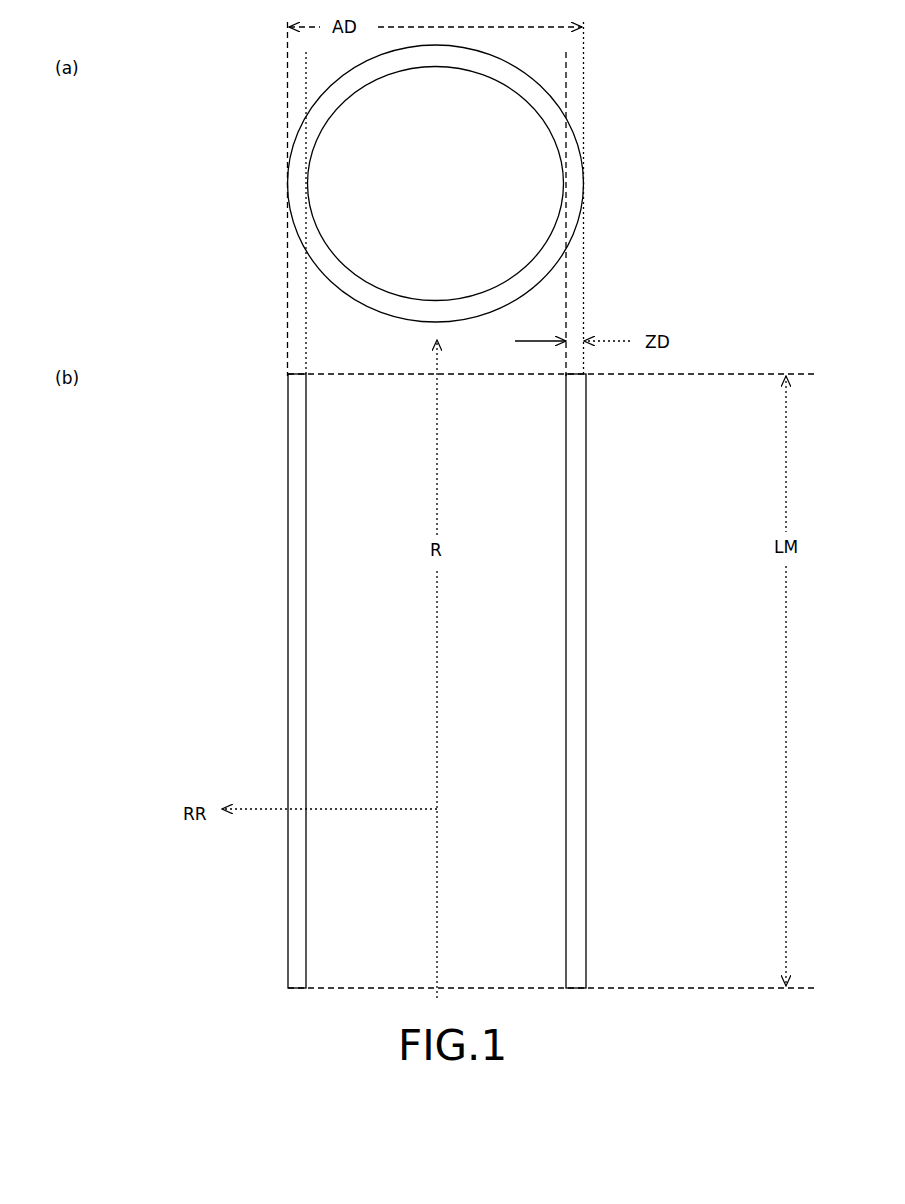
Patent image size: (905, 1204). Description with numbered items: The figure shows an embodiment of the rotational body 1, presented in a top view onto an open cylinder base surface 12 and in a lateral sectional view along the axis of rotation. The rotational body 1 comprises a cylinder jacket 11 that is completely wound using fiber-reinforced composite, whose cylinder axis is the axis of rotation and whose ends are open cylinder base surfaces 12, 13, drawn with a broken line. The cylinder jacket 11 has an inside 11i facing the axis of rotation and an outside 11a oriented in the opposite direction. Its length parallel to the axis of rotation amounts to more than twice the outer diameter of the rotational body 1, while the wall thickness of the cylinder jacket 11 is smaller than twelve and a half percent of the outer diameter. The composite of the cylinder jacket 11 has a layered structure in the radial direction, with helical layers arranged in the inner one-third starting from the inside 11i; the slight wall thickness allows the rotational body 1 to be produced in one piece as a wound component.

The rotational body 1 is at (203, 195).
The cylinder jacket 11 is at (575, 182).
The outside 11a is at (330, 282).
The inside 11i is at (477, 74).
The open cylinder base surface 12 is at (370, 455).
The open cylinder base surface 13 is at (350, 985).